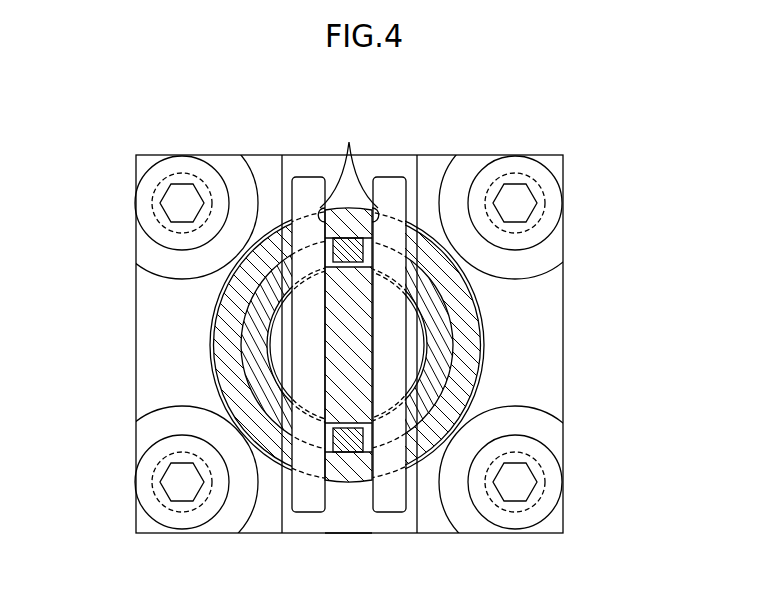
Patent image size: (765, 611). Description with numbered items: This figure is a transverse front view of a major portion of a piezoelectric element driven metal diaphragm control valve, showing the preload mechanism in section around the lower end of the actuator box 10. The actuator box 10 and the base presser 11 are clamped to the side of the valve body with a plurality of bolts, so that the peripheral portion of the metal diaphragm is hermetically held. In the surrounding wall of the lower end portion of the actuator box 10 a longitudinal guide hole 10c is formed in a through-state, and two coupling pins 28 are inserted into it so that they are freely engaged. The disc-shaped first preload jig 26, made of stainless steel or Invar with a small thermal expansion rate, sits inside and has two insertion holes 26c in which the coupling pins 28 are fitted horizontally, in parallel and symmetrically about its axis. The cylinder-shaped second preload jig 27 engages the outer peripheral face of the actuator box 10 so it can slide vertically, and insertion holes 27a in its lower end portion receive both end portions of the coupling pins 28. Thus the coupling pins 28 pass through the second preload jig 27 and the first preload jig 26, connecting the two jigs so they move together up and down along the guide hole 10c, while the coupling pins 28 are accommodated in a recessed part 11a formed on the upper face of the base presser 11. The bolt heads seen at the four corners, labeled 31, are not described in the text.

The actuator box 10 is at (418, 337).
The longitudinal guide hole 10c is at (292, 273).
The base presser 11 is at (187, 365).
The recessed part 11a is at (348, 505).
The No. 1 preload jig 26 is at (357, 334).
The insertion holes 26c is at (298, 338).
The No. 2 preload jig 27 is at (233, 382).
The insertion holes 27a is at (398, 552).
The coupling pins 28 is at (307, 195).
The bolt 31 is at (145, 197).